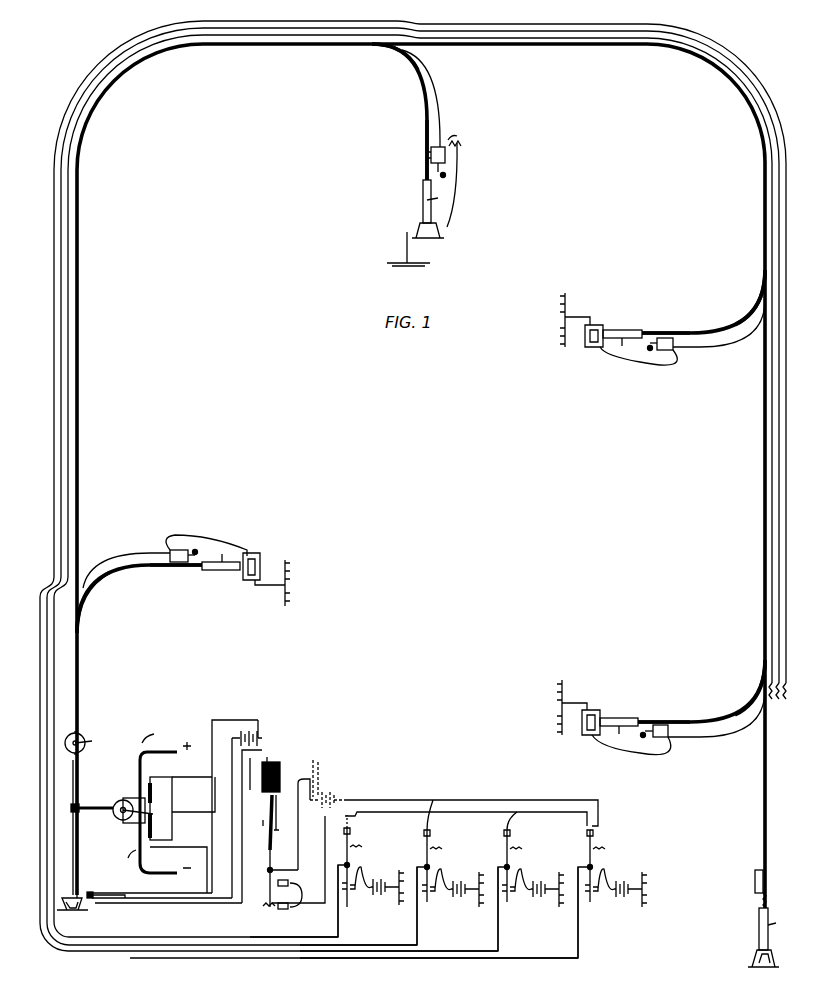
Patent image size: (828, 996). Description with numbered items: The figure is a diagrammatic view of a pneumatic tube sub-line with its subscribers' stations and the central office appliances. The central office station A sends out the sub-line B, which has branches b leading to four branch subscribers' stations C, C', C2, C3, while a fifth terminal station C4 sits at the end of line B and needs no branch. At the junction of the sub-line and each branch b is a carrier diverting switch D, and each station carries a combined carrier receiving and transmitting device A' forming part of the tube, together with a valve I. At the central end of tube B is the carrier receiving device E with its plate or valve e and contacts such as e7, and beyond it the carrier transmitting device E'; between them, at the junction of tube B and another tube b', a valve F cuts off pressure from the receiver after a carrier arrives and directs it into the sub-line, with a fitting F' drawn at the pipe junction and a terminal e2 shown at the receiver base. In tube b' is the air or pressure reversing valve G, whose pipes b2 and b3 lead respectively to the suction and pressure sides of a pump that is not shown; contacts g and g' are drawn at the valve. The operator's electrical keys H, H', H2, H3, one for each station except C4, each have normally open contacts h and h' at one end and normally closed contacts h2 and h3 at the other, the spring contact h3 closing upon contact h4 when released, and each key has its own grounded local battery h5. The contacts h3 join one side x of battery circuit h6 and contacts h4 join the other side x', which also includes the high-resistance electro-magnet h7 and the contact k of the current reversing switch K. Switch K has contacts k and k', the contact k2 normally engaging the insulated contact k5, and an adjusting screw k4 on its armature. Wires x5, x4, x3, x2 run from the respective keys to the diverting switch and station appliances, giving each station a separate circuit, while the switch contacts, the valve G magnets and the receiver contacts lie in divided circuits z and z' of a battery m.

The sub-line B is at (80, 206).
The side of battery circuit x is at (413, 489).
The other side of battery circuit x' is at (357, 841).
The wire x2 is at (439, 966).
The wire x3 is at (399, 942).
The wire x4 is at (358, 936).
The wire x5 is at (294, 928).
The subscriber's station C is at (162, 565).
The subscriber's station C' is at (425, 135).
The subscriber's station C2 is at (682, 317).
The subscriber's station C3 is at (678, 707).
The terminal subscriber's station C4 is at (741, 889).
The carrier diverting switch D is at (392, 50).
The branch b is at (421, 406).
The valve I is at (446, 155).
The combined carrier receiving and transmitting device A' is at (496, 573).
The central office station A is at (352, 825).
The carrier transmitting device E' is at (83, 735).
The valve F is at (83, 827).
The pipe fitting F' is at (84, 820).
The tube b' is at (96, 799).
The air or pressure reversing valve G is at (133, 796).
The pipe b3 is at (165, 770).
The pipe b2 is at (159, 841).
The contact g is at (161, 808).
The contact g' is at (160, 825).
The divided circuit z is at (191, 829).
The divided circuit z' is at (206, 827).
The carrier receiving device E is at (77, 881).
The plate or valve e is at (67, 889).
The terminal e2 is at (92, 890).
The contact e7 is at (112, 886).
The current reversing switch K is at (251, 802).
The battery m is at (245, 730).
The adjusting screw k4 is at (277, 788).
The contact k is at (270, 860).
The contact k' is at (282, 814).
The contact k2 is at (266, 840).
The contact k5 is at (278, 902).
The electro-magnet h7 is at (298, 859).
The battery or circuit h6 is at (327, 784).
The contact h4 is at (471, 801).
The operator's electrical key H is at (371, 876).
The operator's electrical key H' is at (450, 872).
The operator's electrical key H2 is at (505, 900).
The operator's electrical key H3 is at (612, 894).
The local battery h5 is at (459, 868).
The contact h is at (510, 917).
The contact h' is at (530, 917).
The contact h2 is at (503, 838).
The spring contact h3 is at (525, 837).